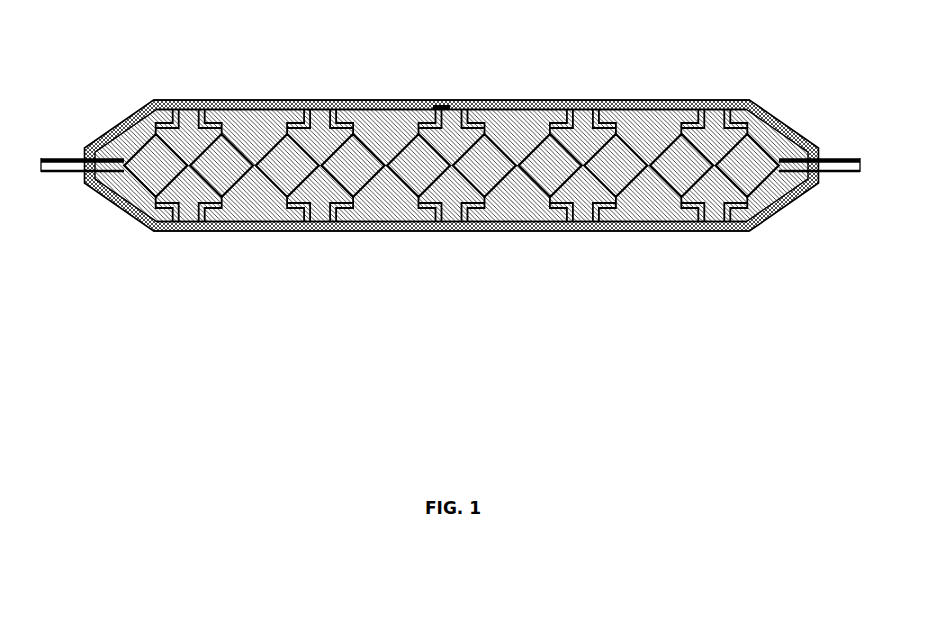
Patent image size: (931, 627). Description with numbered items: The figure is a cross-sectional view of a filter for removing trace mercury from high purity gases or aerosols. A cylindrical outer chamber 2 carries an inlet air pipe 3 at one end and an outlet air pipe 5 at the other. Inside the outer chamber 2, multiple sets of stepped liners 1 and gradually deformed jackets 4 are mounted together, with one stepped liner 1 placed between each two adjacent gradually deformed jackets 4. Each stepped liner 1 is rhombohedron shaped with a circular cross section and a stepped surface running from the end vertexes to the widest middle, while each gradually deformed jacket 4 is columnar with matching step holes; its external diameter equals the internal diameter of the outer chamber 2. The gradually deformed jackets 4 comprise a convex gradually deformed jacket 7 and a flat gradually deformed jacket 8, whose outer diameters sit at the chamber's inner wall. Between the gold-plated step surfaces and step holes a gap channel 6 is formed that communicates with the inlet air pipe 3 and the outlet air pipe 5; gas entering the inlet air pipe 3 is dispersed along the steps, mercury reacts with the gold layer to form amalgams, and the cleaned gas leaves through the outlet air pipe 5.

The stepped liner 1 is at (238, 101).
The outer chamber 2 is at (468, 101).
The inlet air pipe 3 is at (45, 161).
The gradually deformed jacket 4 is at (613, 101).
The outlet air pipe 5 is at (848, 158).
The gap channel 6 is at (652, 232).
The convex gradually deformed jacket 7 is at (408, 231).
The flat gradually deformed jacket 8 is at (510, 232).